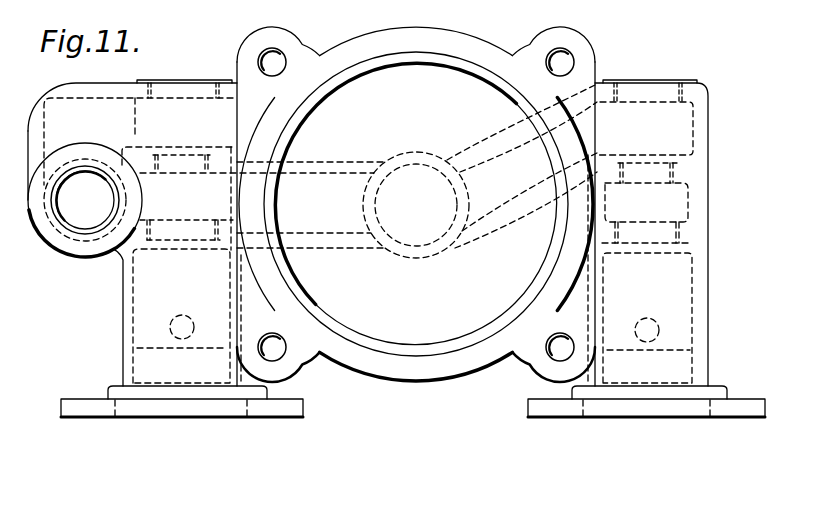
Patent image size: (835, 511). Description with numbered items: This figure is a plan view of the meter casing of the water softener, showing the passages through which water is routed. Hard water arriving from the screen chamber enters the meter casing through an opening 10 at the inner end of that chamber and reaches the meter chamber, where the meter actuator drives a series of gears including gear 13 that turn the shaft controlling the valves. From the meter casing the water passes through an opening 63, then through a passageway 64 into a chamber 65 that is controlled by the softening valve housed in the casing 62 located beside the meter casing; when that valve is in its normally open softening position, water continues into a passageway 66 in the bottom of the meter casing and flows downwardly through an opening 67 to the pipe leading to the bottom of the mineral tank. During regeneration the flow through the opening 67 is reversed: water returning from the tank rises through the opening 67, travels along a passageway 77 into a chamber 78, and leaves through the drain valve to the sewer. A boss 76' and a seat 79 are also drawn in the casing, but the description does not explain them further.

The opening 10 is at (36, 200).
The gear 13 is at (636, 67).
The casing 62 is at (123, 322).
The opening 63 is at (312, 119).
The passageway 64 is at (177, 108).
The chamber 65 is at (192, 183).
The passageway 66 is at (330, 168).
The opening 67 is at (431, 238).
The inlet boss 76' is at (85, 216).
The passageway 77 is at (677, 113).
The chamber 78 is at (680, 197).
The valve seat 79 is at (651, 163).